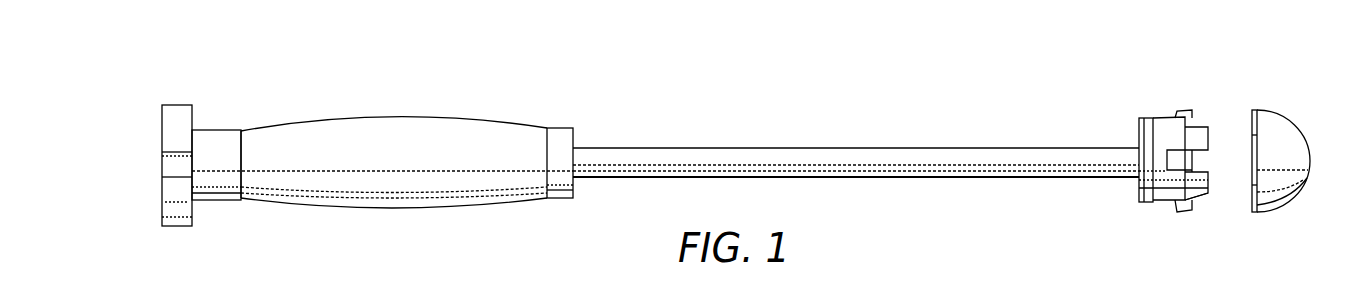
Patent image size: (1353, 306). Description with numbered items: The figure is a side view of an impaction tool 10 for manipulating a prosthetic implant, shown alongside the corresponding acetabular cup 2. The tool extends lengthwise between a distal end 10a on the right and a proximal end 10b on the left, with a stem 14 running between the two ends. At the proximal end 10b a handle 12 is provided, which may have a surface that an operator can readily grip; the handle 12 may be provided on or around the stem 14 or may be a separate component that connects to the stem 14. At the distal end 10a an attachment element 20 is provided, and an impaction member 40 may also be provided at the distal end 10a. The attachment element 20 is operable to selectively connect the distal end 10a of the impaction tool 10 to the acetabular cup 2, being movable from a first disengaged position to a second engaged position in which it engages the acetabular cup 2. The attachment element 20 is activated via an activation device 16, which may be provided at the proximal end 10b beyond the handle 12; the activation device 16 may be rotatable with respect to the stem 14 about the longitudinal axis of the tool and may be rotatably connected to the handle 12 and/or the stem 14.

The impaction tool 10 is at (1043, 79).
The distal end 10a is at (1207, 192).
The proximal end 10b is at (162, 165).
The handle 12 is at (392, 118).
The stem 14 is at (855, 148).
The activation device 16 is at (176, 105).
The attachment element 20 is at (1180, 112).
The impaction member 40 is at (1197, 127).
The acetabular cup 2 is at (1285, 124).